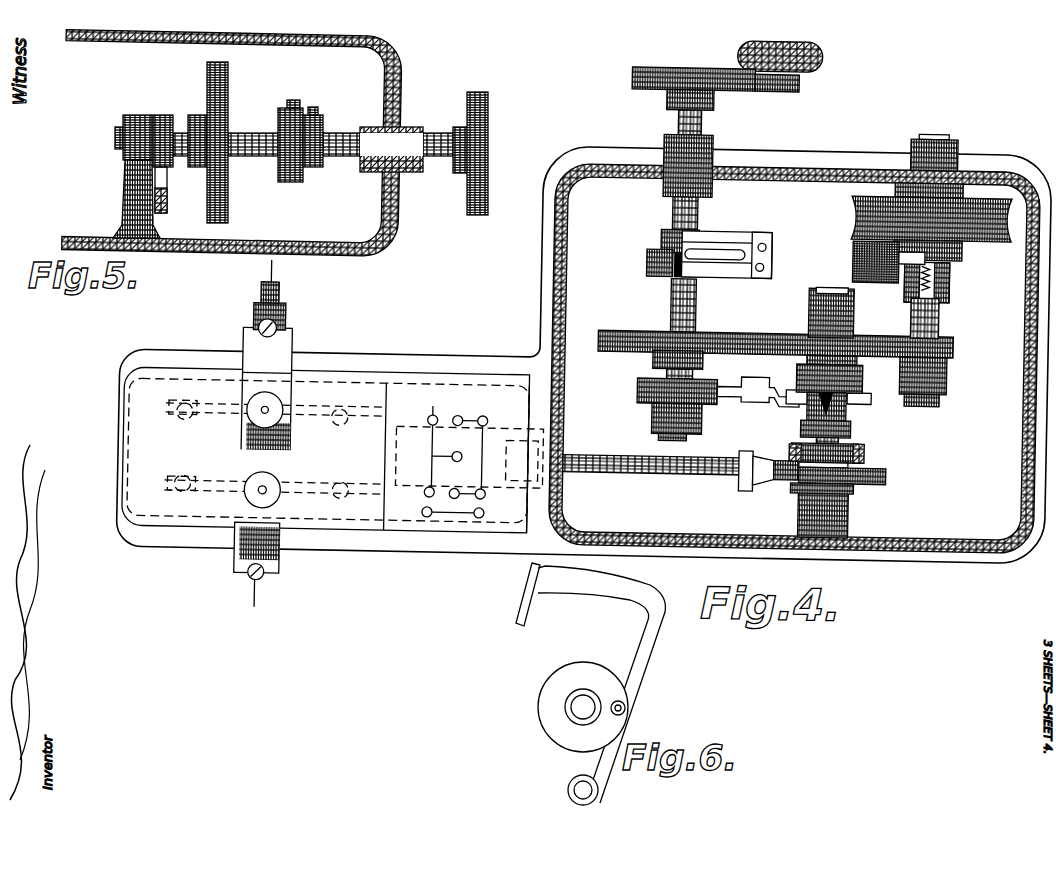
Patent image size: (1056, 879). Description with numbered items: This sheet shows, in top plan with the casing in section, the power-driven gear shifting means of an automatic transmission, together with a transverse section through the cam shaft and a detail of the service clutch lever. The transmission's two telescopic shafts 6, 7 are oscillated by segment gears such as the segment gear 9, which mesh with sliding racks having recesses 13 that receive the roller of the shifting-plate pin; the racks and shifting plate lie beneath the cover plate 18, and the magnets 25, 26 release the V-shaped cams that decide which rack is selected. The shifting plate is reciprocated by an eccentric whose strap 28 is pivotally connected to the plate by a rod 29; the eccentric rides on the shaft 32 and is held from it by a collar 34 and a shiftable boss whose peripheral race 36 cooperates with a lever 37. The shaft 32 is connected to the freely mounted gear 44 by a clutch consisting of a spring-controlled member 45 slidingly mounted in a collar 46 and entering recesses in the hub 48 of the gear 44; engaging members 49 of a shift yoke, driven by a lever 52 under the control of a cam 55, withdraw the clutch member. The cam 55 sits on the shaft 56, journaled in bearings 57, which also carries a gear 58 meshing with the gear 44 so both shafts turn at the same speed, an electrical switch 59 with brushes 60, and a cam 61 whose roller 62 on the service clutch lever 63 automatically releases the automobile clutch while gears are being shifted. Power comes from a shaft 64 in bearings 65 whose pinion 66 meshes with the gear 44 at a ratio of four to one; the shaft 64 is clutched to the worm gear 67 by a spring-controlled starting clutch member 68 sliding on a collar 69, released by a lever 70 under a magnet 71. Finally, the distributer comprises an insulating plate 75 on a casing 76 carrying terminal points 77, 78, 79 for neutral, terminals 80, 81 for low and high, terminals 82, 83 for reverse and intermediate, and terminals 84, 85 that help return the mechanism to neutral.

In FIG. 4, the telescopic shaft 6 is at (280, 299).
In FIG. 4, the telescopic shaft 7 is at (285, 324).
In FIG. 4, the segment gear 9 is at (272, 442).
In FIG. 4, the recesses 13 is at (780, 393).
In FIG. 4, the cover plate 18 is at (270, 357).
In FIG. 4, the magnet 25 is at (256, 490).
In FIG. 4, the magnet 26 is at (258, 428).
In FIG. 4, the strap 28 is at (888, 475).
In FIG. 4, the rod 29 is at (680, 476).
In FIG. 4, the shaft 32 is at (792, 448).
In FIG. 4, the collar 34 is at (851, 495).
In FIG. 4, the race 36 is at (797, 466).
In FIG. 4, the lever 37 is at (867, 452).
In FIG. 4, the gear 44 is at (783, 338).
In FIG. 4, the spring-controlled clutch member 45 is at (840, 398).
In FIG. 4, the collar 46 is at (835, 425).
In FIG. 4, the hub 48 is at (733, 338).
In FIG. 4, the engaging members 49 is at (793, 404).
In FIG. 5, the lever 52 is at (166, 205).
In FIG. 4, the lever 52 is at (733, 392).
In FIG. 5, the cam 55 is at (163, 118).
In FIG. 4, the cam 55 is at (640, 392).
In FIG. 5, the shaft 56 is at (248, 133).
In FIG. 4, the shaft 56 is at (697, 123).
In FIG. 6, the shaft 56 is at (577, 703).
In FIG. 5, the bearings 57 is at (133, 128).
In FIG. 4, the bearings 57 is at (672, 150).
In FIG. 5, the gear 58 is at (228, 88).
In FIG. 4, the gear 58 is at (598, 334).
In FIG. 5, the electrical switch 59 is at (292, 181).
In FIG. 4, the electrical switch 59 is at (706, 240).
In FIG. 5, the brushes 60 is at (306, 116).
In FIG. 4, the brushes 60 is at (736, 242).
In FIG. 5, the cam 61 is at (482, 156).
In FIG. 4, the cam 61 is at (686, 88).
In FIG. 6, the cam 61 is at (578, 672).
In FIG. 4, the roller 62 is at (796, 89).
In FIG. 6, the roller 62 is at (628, 710).
In FIG. 4, the service clutch lever 63 is at (818, 55).
In FIG. 6, the service clutch lever 63 is at (640, 667).
In FIG. 4, the shaft 64 is at (940, 323).
In FIG. 4, the bearings 65 is at (957, 163).
In FIG. 4, the pinion 66 is at (954, 350).
In FIG. 4, the worm gear 67 is at (995, 200).
In FIG. 4, the starting clutch member 68 is at (950, 278).
In FIG. 4, the collar 69 is at (897, 283).
In FIG. 4, the lever 70 is at (962, 267).
In FIG. 4, the magnet 71 is at (853, 258).
In FIG. 4, the insulating plate 75 is at (410, 450).
In FIG. 4, the casing 76 is at (326, 450).
In FIG. 4, the terminal point 77 is at (473, 407).
In FIG. 4, the terminal point 78 is at (467, 446).
In FIG. 4, the terminal point 79 is at (472, 485).
In FIG. 4, the terminal 80 is at (421, 408).
In FIG. 4, the terminal 81 is at (429, 495).
In FIG. 4, the terminal 82 is at (489, 425).
In FIG. 4, the terminal 83 is at (488, 501).
In FIG. 4, the terminal 84 is at (428, 524).
In FIG. 4, the terminal 85 is at (480, 524).